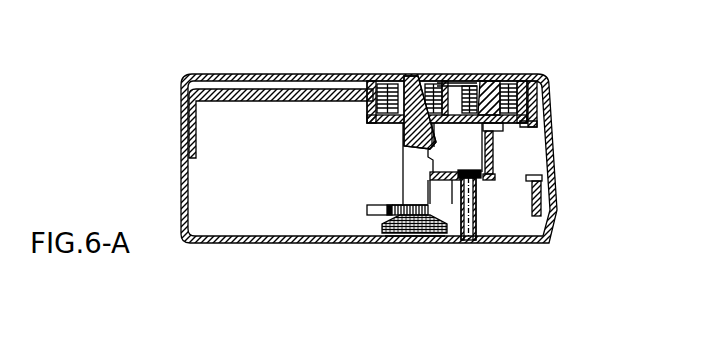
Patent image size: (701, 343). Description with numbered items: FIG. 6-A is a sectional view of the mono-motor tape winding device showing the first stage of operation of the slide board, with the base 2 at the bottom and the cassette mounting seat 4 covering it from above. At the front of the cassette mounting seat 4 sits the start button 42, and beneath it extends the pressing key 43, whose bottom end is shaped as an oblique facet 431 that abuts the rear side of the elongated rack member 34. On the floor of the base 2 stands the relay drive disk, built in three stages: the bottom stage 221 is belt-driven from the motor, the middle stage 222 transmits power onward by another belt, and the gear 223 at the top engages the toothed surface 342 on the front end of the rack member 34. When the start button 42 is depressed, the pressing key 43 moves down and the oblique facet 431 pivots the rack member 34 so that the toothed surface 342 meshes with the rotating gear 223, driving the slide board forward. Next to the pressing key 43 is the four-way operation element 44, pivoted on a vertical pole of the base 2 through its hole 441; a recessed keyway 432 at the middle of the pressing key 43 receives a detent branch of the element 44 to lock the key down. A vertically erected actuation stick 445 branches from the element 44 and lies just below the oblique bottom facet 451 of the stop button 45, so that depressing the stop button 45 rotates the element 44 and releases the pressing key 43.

The base 2 is at (298, 236).
The cassette mounting seat 4 is at (292, 102).
The start button 42 is at (418, 73).
The pressing key 43 is at (403, 145).
The stop button 45 is at (488, 74).
The oblique bottom facet 451 is at (520, 124).
The recessed keyway 432 is at (433, 153).
The oblique facet 431 is at (408, 204).
The four-way operation element 44 is at (466, 170).
The hole 441 is at (426, 208).
The actuation stick 445 is at (496, 132).
The rack member 34 is at (372, 206).
The toothed surface 342 is at (401, 205).
The gear 223 is at (410, 206).
The middle stage 222 is at (386, 223).
The bottom stage 221 is at (418, 244).